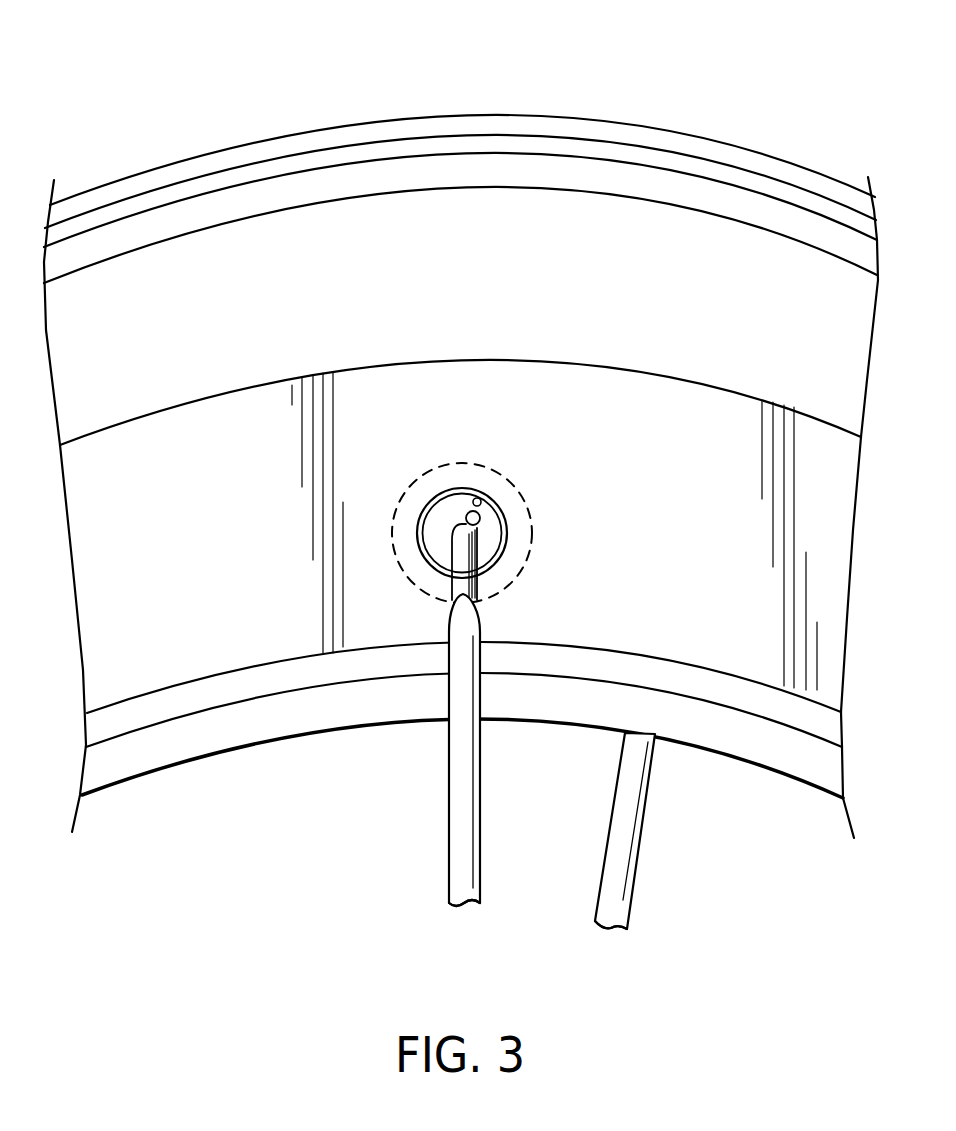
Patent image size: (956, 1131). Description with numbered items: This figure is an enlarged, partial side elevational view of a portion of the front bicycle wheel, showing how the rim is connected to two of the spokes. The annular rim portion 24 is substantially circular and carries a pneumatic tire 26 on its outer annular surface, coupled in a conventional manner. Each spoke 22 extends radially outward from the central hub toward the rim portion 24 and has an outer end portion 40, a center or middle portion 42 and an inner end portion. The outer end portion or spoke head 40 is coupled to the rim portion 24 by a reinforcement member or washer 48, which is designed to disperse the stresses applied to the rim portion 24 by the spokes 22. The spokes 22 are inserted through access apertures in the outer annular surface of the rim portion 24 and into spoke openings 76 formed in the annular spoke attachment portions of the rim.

The pneumatic tire 26 is at (652, 124).
The annular rim portion 24 is at (222, 765).
The spoke 22 is at (440, 801).
The center or middle portion 42 is at (447, 874).
The outer end portion 40 is at (480, 553).
The reinforcement member 48 is at (504, 532).
The spoke opening 76 is at (480, 499).